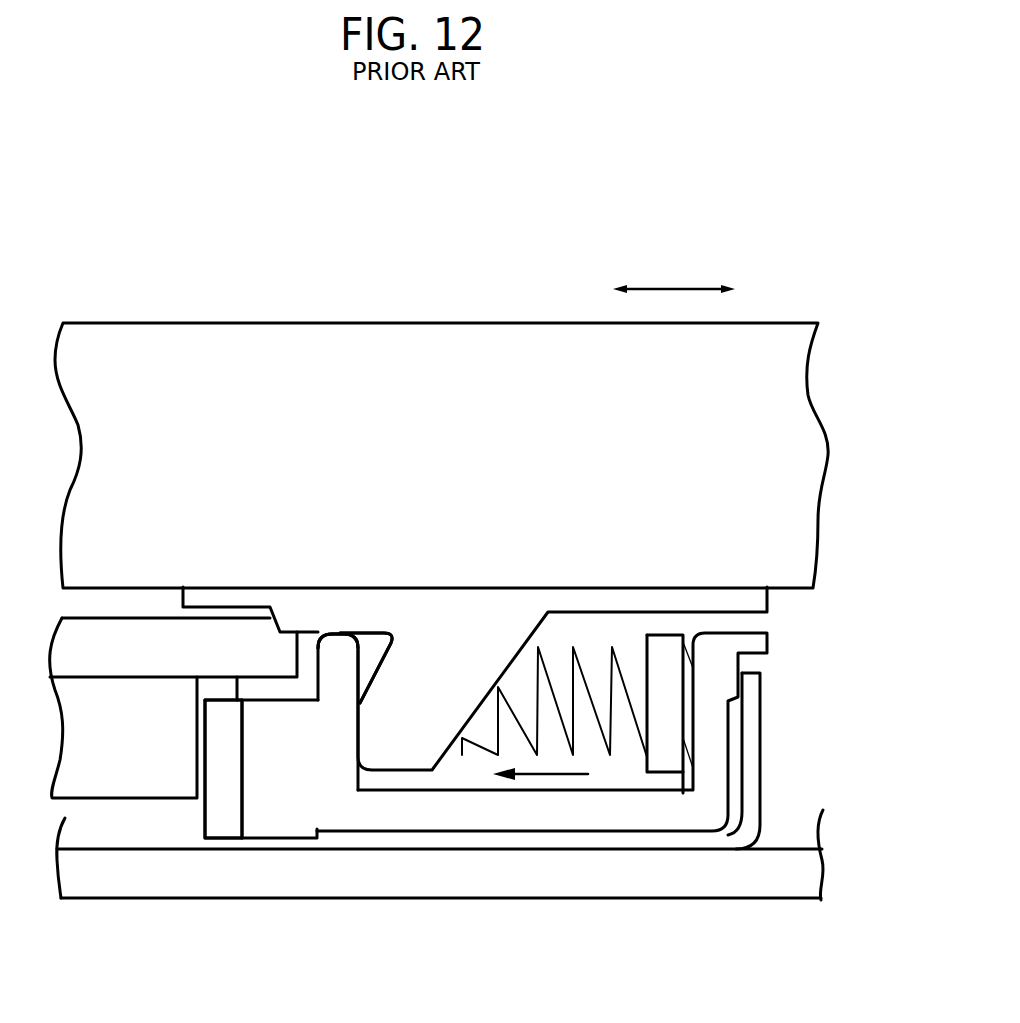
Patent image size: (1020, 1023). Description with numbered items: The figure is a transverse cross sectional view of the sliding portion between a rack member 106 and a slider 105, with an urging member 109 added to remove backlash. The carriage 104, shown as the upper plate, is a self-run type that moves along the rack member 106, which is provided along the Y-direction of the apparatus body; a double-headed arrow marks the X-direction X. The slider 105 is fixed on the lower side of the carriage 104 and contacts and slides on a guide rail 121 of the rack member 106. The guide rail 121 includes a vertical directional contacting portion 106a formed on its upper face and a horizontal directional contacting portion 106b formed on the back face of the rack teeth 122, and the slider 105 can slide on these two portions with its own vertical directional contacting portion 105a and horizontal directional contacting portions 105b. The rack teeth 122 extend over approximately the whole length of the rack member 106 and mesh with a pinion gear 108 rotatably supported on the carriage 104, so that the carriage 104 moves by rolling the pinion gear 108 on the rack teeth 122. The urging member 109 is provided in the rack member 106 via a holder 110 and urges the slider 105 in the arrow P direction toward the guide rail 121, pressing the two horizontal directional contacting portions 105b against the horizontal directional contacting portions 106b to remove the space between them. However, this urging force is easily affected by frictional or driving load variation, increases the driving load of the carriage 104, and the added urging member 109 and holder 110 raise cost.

The carriage 104 is at (405, 345).
The slider 105 is at (486, 610).
The vertical directional contacting portion of slider 105a is at (350, 630).
The vertical directional contacting portion 106a is at (350, 630).
The horizontal directional contacting portion of slider 105b is at (358, 730).
The horizontal directional contacting portion 106b is at (358, 730).
The rack member 106 is at (280, 790).
The pinion gear 108 is at (110, 755).
The urging member 109 is at (583, 667).
The holder 110 is at (670, 758).
The guide rail 121 is at (335, 683).
The rack teeth 122 is at (222, 800).
The arrow P direction P is at (548, 780).
The X-direction X is at (674, 273).